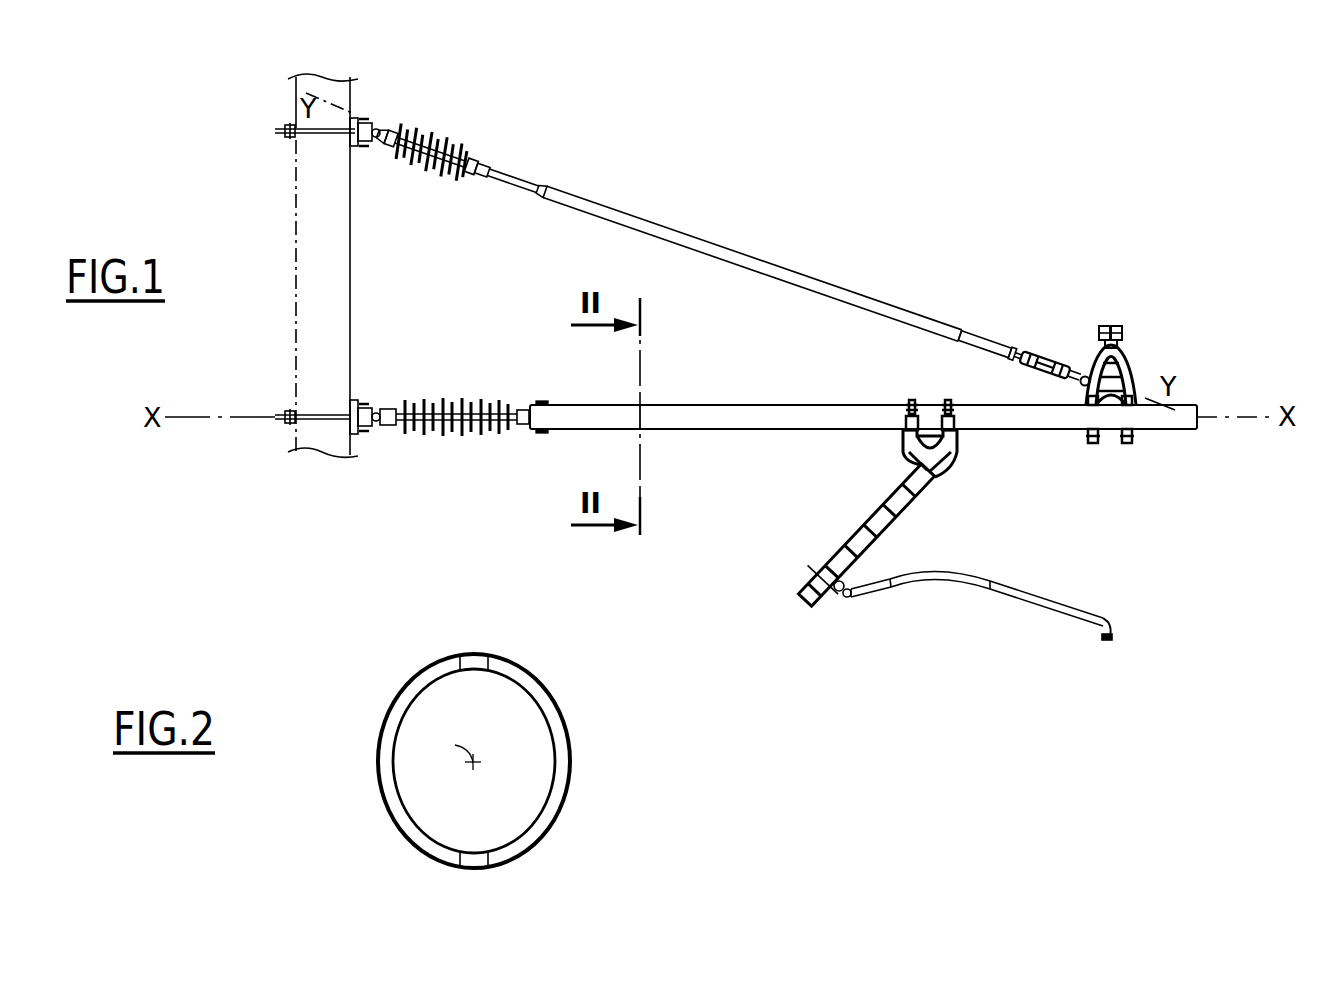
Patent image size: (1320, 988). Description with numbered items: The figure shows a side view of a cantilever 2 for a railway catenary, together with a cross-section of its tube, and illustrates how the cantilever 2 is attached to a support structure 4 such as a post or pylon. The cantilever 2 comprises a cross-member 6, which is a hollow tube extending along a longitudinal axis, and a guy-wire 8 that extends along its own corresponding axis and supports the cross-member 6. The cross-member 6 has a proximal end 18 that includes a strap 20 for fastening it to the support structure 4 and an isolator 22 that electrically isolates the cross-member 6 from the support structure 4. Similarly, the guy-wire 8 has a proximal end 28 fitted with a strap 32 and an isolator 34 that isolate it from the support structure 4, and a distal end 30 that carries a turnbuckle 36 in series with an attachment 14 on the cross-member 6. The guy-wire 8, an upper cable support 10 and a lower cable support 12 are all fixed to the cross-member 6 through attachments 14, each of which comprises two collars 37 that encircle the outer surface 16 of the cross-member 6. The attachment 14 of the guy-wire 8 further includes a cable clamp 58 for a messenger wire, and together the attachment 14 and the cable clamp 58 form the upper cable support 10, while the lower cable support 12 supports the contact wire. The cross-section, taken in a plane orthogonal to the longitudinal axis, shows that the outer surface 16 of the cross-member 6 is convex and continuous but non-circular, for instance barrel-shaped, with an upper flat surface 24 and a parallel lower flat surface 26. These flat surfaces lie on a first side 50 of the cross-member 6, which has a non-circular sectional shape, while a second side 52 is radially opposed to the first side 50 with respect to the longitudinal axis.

In FIG. 1, the cantilever 2 is at (1131, 221).
In FIG. 1, the support structure 4 is at (262, 210).
In FIG. 1, the cross-member 6 is at (735, 433).
In FIG. 2, the cross-member 6 is at (455, 746).
In FIG. 1, the guy-wire 8 is at (745, 249).
In FIG. 1, the upper cable support 10 is at (1156, 369).
In FIG. 1, the lower cable support 12 is at (1020, 583).
In FIG. 1, the attachment 14 is at (928, 394).
In FIG. 2, the outer surface 16 is at (563, 710).
In FIG. 1, the proximal end 18 is at (428, 420).
In FIG. 1, the strap 20 is at (320, 410).
In FIG. 1, the isolator 22 is at (452, 400).
In FIG. 2, the upper flat surface 24 is at (470, 655).
In FIG. 2, the lower flat surface 26 is at (475, 868).
In FIG. 1, the proximal end 28 is at (452, 126).
In FIG. 1, the distal end 30 is at (985, 331).
In FIG. 1, the strap 32 is at (360, 127).
In FIG. 1, the isolator 34 is at (462, 160).
In FIG. 1, the turnbuckle 36 is at (1043, 359).
In FIG. 1, the collar 37 is at (1137, 431).
In FIG. 2, the first side 50 is at (410, 658).
In FIG. 2, the second side 52 is at (375, 836).
In FIG. 1, the cable clamp 58 is at (1118, 332).